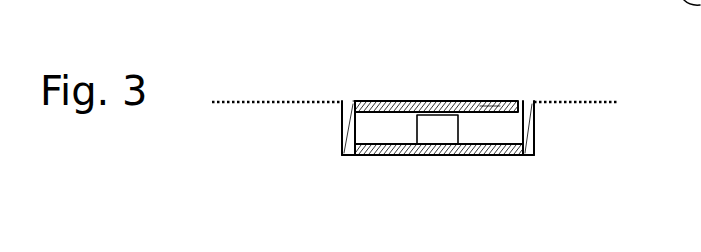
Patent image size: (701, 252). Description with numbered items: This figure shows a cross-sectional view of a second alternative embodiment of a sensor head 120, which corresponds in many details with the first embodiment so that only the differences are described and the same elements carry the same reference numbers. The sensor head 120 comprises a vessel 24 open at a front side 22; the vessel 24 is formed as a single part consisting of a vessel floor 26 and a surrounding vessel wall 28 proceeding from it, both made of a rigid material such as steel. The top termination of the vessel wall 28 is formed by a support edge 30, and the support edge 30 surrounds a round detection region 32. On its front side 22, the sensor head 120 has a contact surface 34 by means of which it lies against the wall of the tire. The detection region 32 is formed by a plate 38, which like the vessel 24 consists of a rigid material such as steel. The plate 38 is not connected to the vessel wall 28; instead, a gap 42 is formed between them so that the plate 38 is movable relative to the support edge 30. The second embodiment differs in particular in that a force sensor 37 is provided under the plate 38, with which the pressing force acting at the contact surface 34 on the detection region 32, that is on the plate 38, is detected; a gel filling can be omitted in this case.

The sensor head 120 is at (310, 63).
The front side 22 is at (433, 78).
The vessel 24 is at (530, 150).
The vessel floor 26 is at (372, 150).
The vessel wall 28 is at (343, 132).
The support edge 30 is at (347, 100).
The detection region 32 is at (392, 93).
The contact surface 34 is at (453, 100).
The force sensor 37 is at (433, 128).
The plate 38 is at (490, 107).
The gap 42 is at (355, 97).